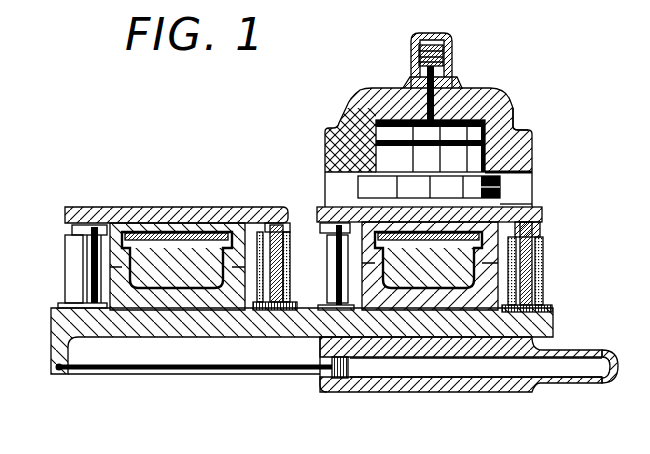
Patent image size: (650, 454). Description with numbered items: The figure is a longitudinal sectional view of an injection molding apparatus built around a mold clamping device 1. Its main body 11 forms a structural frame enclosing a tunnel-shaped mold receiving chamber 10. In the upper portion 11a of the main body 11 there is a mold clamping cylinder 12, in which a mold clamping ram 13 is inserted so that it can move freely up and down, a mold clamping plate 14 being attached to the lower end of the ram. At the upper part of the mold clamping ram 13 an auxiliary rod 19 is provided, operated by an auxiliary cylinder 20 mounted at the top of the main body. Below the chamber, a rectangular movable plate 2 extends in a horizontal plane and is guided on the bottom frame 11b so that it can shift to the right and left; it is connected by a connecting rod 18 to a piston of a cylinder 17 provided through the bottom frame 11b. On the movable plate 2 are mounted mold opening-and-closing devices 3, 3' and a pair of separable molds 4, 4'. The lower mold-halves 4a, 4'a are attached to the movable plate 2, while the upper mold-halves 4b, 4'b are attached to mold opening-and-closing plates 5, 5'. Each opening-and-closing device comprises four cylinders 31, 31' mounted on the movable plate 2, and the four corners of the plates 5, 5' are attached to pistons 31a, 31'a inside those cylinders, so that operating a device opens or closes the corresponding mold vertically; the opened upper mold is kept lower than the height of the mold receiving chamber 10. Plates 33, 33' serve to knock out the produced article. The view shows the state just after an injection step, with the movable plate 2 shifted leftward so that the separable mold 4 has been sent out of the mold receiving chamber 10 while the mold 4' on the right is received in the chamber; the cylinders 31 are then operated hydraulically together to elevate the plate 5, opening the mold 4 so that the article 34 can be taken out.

The mold clamping device 1 is at (360, 89).
The movable plate 2 is at (165, 328).
The mold opening-and-closing device 3 is at (176, 182).
The mold opening-and-closing device 3' is at (459, 197).
The separable mold 4 is at (183, 265).
The separable mold 4' is at (555, 263).
The lower mold-half 4a is at (212, 305).
The lower mold-half 4'a is at (429, 323).
The upper mold-half 4b is at (110, 228).
The upper mold-half 4'b is at (388, 216).
The mold opening-and-closing plate 5 is at (176, 200).
The mold opening-and-closing plate 5' is at (531, 183).
The mold receiving chamber 10 is at (343, 168).
The main body 11 is at (513, 98).
The upper portion 11a is at (516, 117).
The bottom frame 11b is at (505, 383).
The mold clamping cylinder 12 is at (372, 140).
The mold clamping ram 13 is at (462, 112).
The mold clamping plate 14 is at (500, 172).
The cylinder 17 is at (411, 370).
The connecting rod 18 is at (264, 366).
The auxiliary rod 19 is at (402, 86).
The auxiliary cylinder 20 is at (413, 43).
The cylinder 31 is at (184, 237).
The cylinder 31' is at (434, 299).
The piston 31a is at (70, 228).
The piston 31'a is at (567, 223).
The plate 33 is at (177, 222).
The plate 33' is at (324, 130).
The article 34 is at (153, 290).